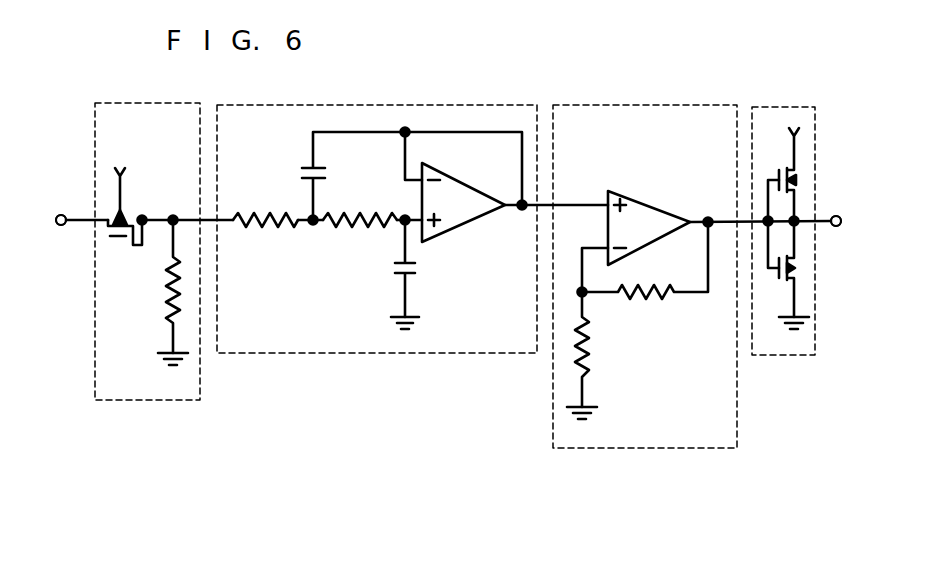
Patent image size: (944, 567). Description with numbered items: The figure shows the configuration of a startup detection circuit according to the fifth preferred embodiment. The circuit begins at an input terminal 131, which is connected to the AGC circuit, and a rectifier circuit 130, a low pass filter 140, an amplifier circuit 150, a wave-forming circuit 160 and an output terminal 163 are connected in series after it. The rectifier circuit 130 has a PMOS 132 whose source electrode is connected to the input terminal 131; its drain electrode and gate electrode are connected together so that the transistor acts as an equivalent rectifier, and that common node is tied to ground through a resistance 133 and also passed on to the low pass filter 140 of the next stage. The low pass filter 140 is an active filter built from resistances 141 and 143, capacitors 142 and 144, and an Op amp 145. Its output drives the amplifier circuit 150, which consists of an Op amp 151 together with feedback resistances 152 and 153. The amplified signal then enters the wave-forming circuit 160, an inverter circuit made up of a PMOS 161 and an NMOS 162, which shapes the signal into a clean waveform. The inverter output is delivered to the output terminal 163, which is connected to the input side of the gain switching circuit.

The rectifier circuit 130 is at (146, 402).
The input terminal 131 is at (57, 228).
The PMOS 132 is at (113, 238).
The resistance 133 is at (165, 320).
The low pass filter 140 is at (366, 355).
The resistance 141 is at (263, 234).
The capacitor 142 is at (302, 169).
The resistance 143 is at (356, 234).
The capacitor 144 is at (412, 276).
The Op amp 145 is at (455, 225).
The amplifier circuit 150 is at (681, 450).
The Op amp 151 is at (646, 196).
The feedback resistance 152 is at (651, 295).
The feedback resistance 153 is at (590, 362).
The wave-forming circuit 160 is at (784, 357).
The PMOS 161 is at (802, 185).
The NMOS 162 is at (801, 268).
The output terminal 163 is at (846, 226).